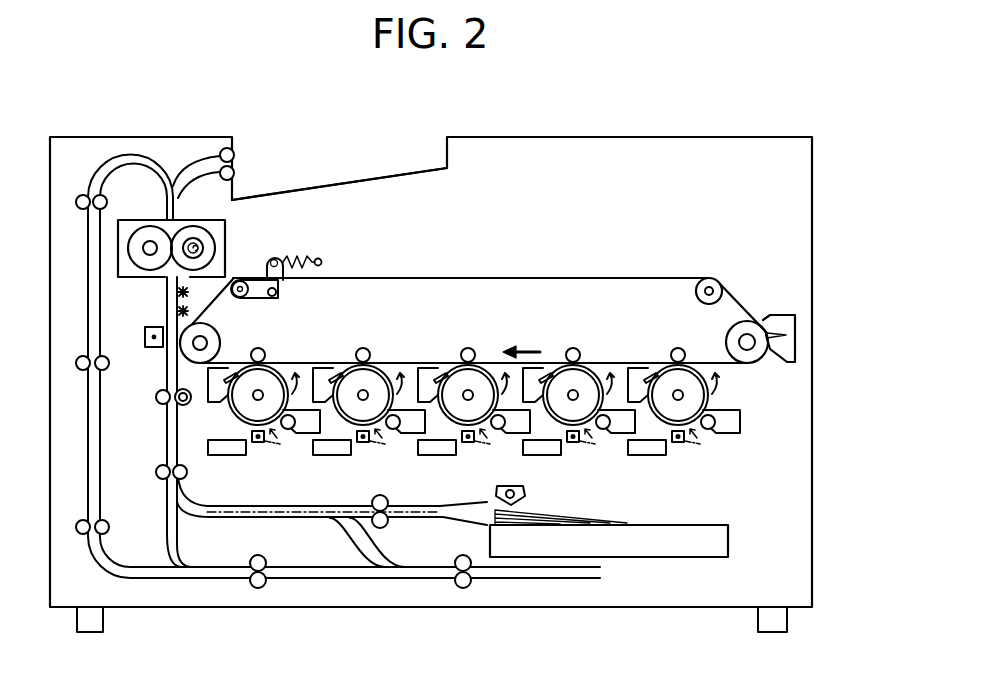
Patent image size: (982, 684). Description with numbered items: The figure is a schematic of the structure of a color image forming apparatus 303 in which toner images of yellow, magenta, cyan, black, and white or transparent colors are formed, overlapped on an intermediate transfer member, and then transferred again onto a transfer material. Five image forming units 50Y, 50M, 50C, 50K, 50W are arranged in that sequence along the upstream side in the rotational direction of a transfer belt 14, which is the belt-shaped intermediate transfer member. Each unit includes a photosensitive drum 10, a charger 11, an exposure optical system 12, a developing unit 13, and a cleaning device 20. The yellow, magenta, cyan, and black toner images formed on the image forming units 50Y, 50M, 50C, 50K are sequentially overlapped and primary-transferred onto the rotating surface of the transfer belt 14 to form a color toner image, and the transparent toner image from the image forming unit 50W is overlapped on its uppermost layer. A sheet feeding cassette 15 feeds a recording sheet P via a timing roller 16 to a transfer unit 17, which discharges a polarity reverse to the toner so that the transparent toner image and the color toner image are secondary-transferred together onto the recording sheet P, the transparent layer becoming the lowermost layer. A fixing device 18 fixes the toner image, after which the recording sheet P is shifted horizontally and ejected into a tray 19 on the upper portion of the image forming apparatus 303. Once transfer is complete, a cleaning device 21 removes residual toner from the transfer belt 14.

The image forming apparatus 303 is at (688, 106).
The photosensitive drum 10 is at (280, 368).
The charger 11 is at (252, 433).
The exposure optical system 12 is at (228, 455).
The developing unit 13 is at (282, 432).
The transfer belt 14 is at (507, 277).
The sheet feeding cassette 15 is at (667, 532).
The timing roller 16 is at (186, 406).
The transfer unit 17 is at (145, 330).
The fixing device 18 is at (227, 226).
The tray 19 is at (303, 189).
The cleaning device 20 is at (216, 358).
The cleaning device 21 is at (780, 314).
The image forming unit 50W is at (262, 398).
The image forming unit 50K is at (361, 344).
The image forming unit 50C is at (470, 345).
The image forming unit 50M is at (574, 345).
The image forming unit 50Y is at (673, 345).
The recording sheet P is at (250, 513).